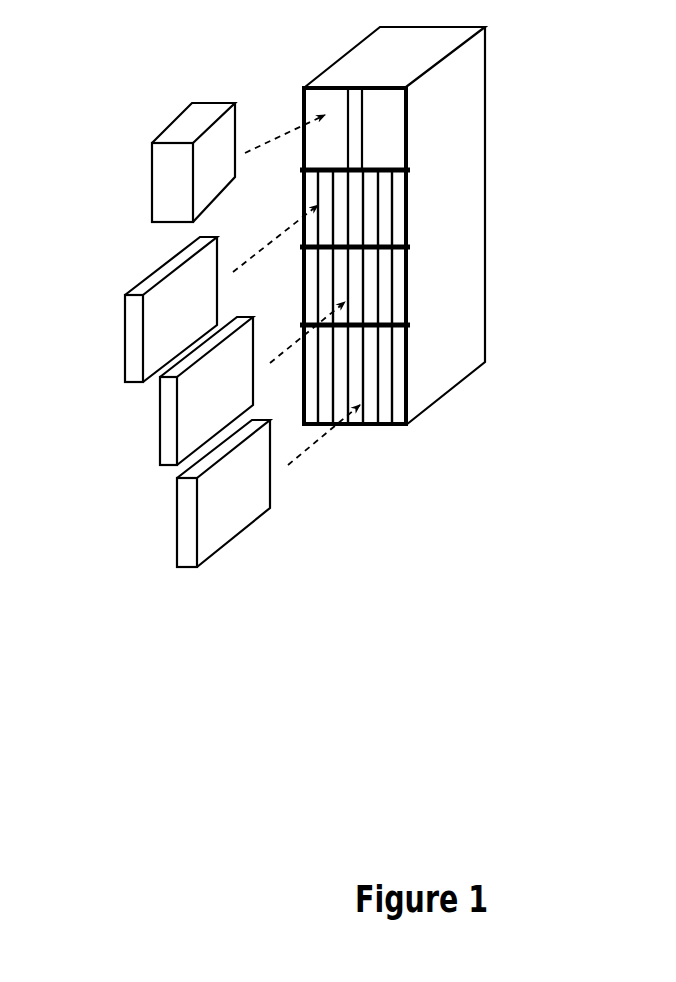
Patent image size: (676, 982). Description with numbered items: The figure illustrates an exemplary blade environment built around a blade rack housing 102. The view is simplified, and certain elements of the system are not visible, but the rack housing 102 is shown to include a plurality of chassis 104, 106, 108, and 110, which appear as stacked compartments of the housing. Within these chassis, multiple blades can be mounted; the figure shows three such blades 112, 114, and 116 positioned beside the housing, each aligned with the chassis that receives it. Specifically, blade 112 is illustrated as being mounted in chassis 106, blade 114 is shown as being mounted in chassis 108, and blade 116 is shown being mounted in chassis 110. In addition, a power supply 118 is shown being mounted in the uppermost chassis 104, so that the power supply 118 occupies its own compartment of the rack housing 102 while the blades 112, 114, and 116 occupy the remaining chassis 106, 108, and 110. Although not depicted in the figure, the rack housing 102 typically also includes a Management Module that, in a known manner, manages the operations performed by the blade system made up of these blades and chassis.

The blade rack housing 102 is at (474, 226).
The chassis 104 is at (407, 125).
The chassis 106 is at (407, 210).
The chassis 108 is at (407, 282).
The chassis 110 is at (398, 373).
The blade 112 is at (125, 315).
The blade 114 is at (158, 390).
The blade 116 is at (177, 502).
The power supply 118 is at (173, 122).